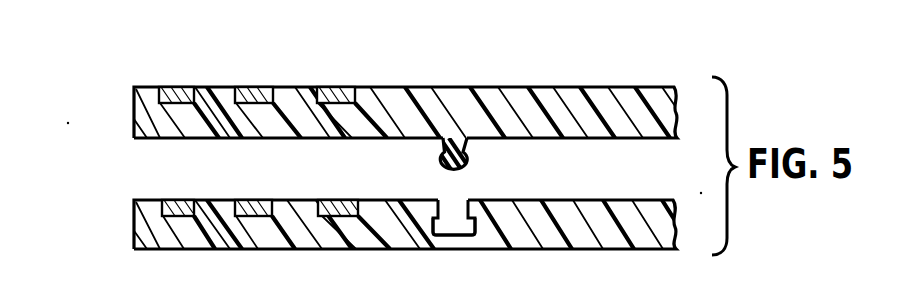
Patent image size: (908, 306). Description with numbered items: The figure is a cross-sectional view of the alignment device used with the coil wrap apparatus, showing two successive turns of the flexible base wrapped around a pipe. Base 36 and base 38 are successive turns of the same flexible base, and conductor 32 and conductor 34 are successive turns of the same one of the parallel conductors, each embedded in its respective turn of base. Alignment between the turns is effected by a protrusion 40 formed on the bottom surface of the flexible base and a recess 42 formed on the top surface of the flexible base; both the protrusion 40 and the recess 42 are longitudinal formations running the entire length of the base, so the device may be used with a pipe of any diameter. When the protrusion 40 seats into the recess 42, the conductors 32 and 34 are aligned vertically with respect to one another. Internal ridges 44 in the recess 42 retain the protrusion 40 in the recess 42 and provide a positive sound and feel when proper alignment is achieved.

The conductor 32 is at (177, 88).
The conductor 34 is at (173, 208).
The base 36 is at (395, 97).
The base 38 is at (382, 213).
The protrusion 40 is at (468, 162).
The recess 42 is at (457, 213).
The internal ridges 44 is at (475, 227).